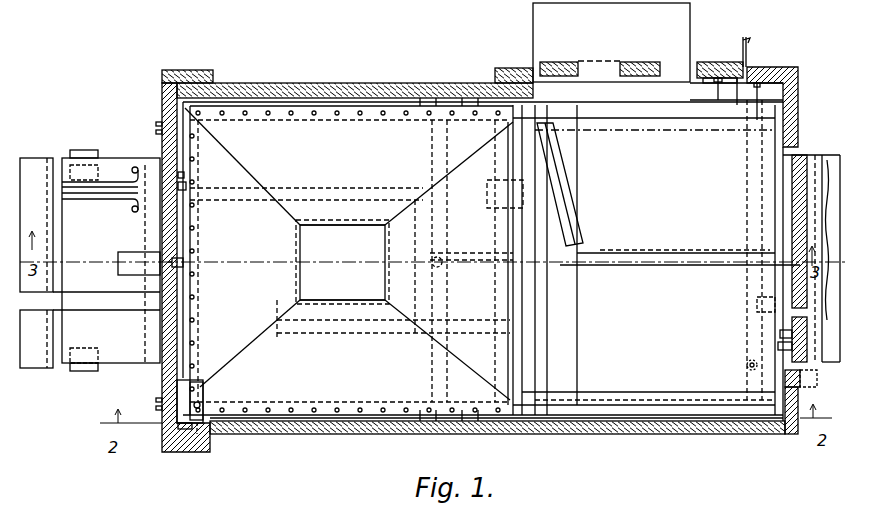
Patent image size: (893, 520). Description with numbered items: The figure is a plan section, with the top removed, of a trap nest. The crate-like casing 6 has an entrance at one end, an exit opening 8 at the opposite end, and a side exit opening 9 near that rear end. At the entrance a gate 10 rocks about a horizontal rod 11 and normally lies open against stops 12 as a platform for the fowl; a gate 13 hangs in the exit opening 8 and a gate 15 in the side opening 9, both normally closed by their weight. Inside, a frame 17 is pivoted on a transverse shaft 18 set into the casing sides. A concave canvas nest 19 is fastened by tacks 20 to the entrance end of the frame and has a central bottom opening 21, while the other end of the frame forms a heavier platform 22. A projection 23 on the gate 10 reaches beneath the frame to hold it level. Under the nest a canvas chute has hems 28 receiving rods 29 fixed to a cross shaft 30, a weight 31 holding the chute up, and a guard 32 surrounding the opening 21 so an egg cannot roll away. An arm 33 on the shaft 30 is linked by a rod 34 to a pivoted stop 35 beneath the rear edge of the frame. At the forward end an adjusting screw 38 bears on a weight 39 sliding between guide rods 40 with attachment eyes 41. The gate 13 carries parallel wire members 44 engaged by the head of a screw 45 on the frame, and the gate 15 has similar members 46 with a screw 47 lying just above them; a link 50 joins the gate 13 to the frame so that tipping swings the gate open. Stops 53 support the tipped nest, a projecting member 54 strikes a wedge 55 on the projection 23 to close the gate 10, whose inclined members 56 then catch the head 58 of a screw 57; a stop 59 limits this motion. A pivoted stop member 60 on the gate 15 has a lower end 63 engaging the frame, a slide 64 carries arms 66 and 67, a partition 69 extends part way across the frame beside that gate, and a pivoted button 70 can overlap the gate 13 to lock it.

The casing 6 is at (362, 91).
The exit opening 8 is at (792, 160).
The exit opening 9 is at (536, 86).
The gate 10 is at (42, 372).
The rod 11 is at (162, 142).
The stops 12 is at (80, 382).
The gate 13 is at (795, 192).
The gate 15 is at (640, 62).
The frame 17 is at (612, 410).
The shaft 18 is at (488, 420).
The nest 19 is at (300, 398).
The tacks 20 is at (355, 412).
The opening 21 is at (330, 248).
The platform 22 is at (680, 405).
The projection 23 is at (200, 282).
The hems 28 is at (362, 333).
The rods 29 is at (256, 348).
The cross shaft 30 is at (432, 368).
The weight 31 is at (494, 186).
The guard 32 is at (317, 302).
The arm 33 is at (441, 267).
The rod or link 34 is at (466, 254).
The stop 35 is at (765, 255).
The adjusting screw 38 is at (197, 436).
The weight 39 is at (205, 390).
The guide rods 40 is at (186, 378).
The eyes 41 is at (175, 430).
The parallel members 44 is at (783, 333).
The screw 45 is at (778, 344).
The parallel members 46 is at (705, 80).
The screw 47 is at (718, 95).
The link 50 is at (748, 366).
The stops 53 is at (186, 84).
The projecting member 54 is at (178, 262).
The inclined or wedge-shaped member 55 is at (150, 272).
The parallel members 56 is at (97, 194).
The screw 57 is at (186, 183).
The head 58 is at (184, 172).
The stop 59 is at (758, 305).
The stop member 60 is at (748, 50).
The lower end 63 is at (757, 97).
The slide 64 is at (786, 70).
The arm 66 is at (793, 100).
The arm 67 is at (737, 87).
The partition 69 is at (572, 202).
The button 70 is at (815, 380).